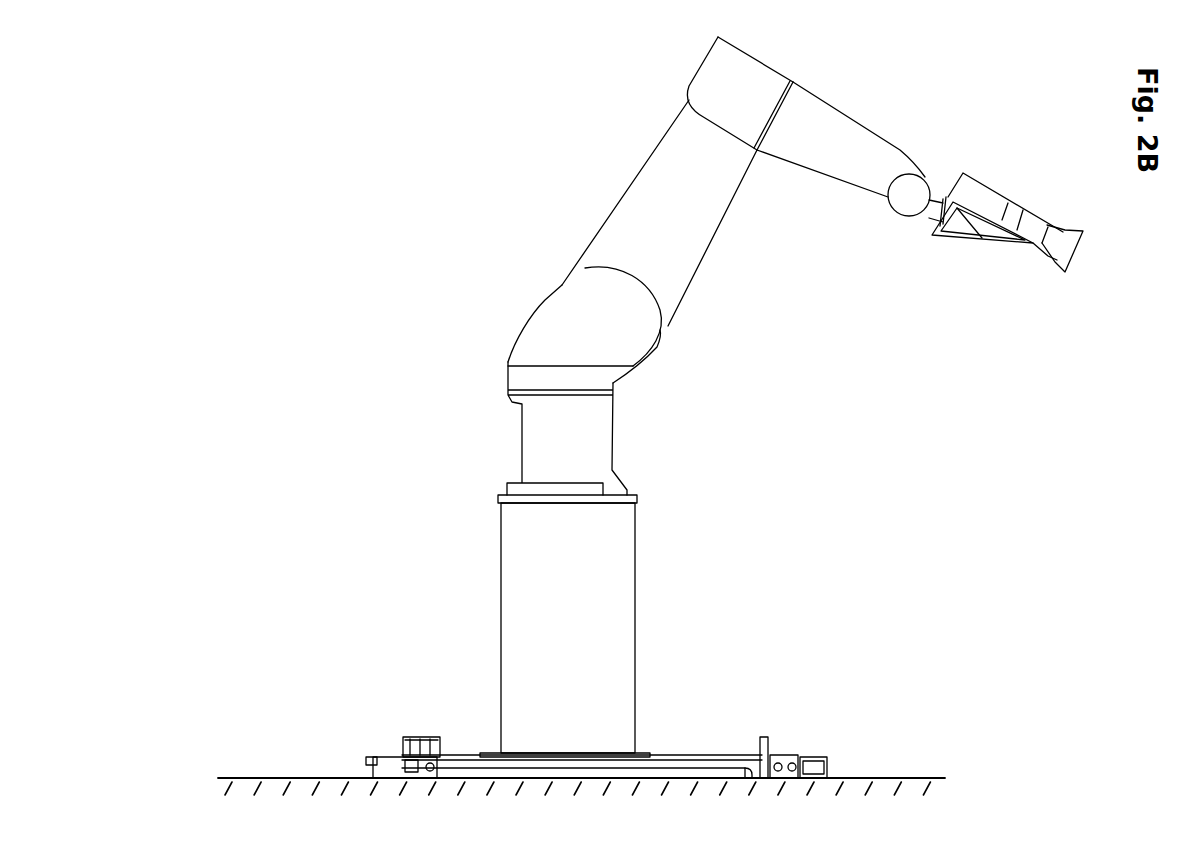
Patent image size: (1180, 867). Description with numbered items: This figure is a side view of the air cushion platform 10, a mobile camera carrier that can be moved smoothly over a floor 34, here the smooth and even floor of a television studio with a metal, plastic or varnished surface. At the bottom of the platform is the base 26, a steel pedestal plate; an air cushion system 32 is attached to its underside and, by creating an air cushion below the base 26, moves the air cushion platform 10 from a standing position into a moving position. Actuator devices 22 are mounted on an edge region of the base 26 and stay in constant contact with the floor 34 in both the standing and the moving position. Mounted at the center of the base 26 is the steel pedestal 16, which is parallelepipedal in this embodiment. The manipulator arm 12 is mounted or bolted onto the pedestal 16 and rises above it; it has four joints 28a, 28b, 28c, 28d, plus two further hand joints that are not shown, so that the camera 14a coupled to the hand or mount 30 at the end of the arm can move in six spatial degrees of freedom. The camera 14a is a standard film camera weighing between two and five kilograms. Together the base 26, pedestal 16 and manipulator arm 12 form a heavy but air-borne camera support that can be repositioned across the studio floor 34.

The air cushion platform 10 is at (445, 703).
The manipulator arm 12 is at (870, 110).
The camera 14a is at (1017, 177).
The steel pedestal 16 is at (630, 587).
The actuator devices 22 is at (392, 763).
The base 26 is at (698, 757).
The joint 28a is at (907, 207).
The joint 28b is at (748, 126).
The joint 28c is at (637, 322).
The joint 28d is at (613, 387).
The hand or mount 30 is at (990, 242).
The air cushion system 32 is at (730, 773).
The floor 34 is at (912, 778).